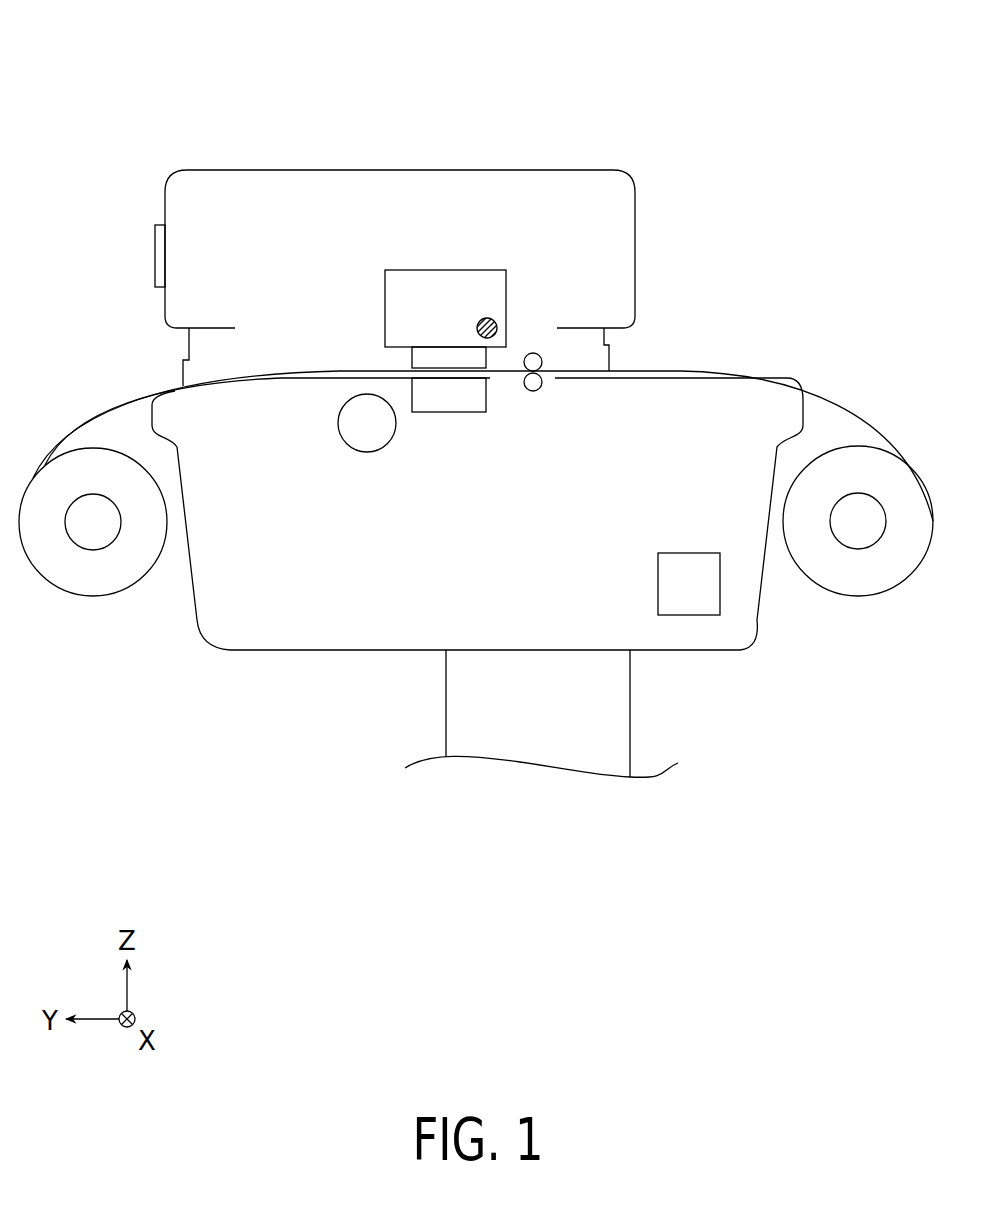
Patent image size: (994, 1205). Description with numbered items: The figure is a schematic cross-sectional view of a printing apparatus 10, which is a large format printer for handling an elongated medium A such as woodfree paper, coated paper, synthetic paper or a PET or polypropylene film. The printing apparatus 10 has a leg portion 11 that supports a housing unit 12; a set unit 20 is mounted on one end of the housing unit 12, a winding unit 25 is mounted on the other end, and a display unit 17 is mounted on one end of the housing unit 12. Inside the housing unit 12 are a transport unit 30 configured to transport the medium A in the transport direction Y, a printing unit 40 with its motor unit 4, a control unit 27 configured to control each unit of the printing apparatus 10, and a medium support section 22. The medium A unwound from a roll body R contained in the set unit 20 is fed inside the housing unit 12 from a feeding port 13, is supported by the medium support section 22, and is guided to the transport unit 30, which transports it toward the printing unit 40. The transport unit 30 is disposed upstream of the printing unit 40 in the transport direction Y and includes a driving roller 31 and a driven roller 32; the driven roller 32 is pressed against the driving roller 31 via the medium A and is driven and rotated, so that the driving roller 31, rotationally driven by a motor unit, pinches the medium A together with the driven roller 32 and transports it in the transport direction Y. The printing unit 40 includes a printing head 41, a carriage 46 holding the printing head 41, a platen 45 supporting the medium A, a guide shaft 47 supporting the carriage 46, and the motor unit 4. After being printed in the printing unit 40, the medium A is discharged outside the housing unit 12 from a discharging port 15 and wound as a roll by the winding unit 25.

The printing apparatus 10 is at (236, 72).
The housing unit 12 is at (565, 170).
The display unit 17 is at (153, 243).
The discharging port 15 is at (170, 357).
The feeding port 13 is at (628, 352).
The printing unit 40 is at (403, 260).
The carriage 46 is at (462, 270).
The guide shaft 47 is at (477, 322).
The printing head 41 is at (410, 357).
The platen 45 is at (452, 414).
The transport unit 30 is at (538, 277).
The driven roller 32 is at (533, 352).
The driving roller 31 is at (534, 392).
The medium support section 22 is at (583, 383).
The medium A is at (832, 400).
The winding unit 25 is at (70, 600).
The set unit 20 is at (890, 605).
The roll body R is at (823, 594).
The motor unit 4 is at (370, 454).
The transport direction Y is at (252, 417).
The control unit 27 is at (658, 580).
The leg portion 11 is at (630, 720).